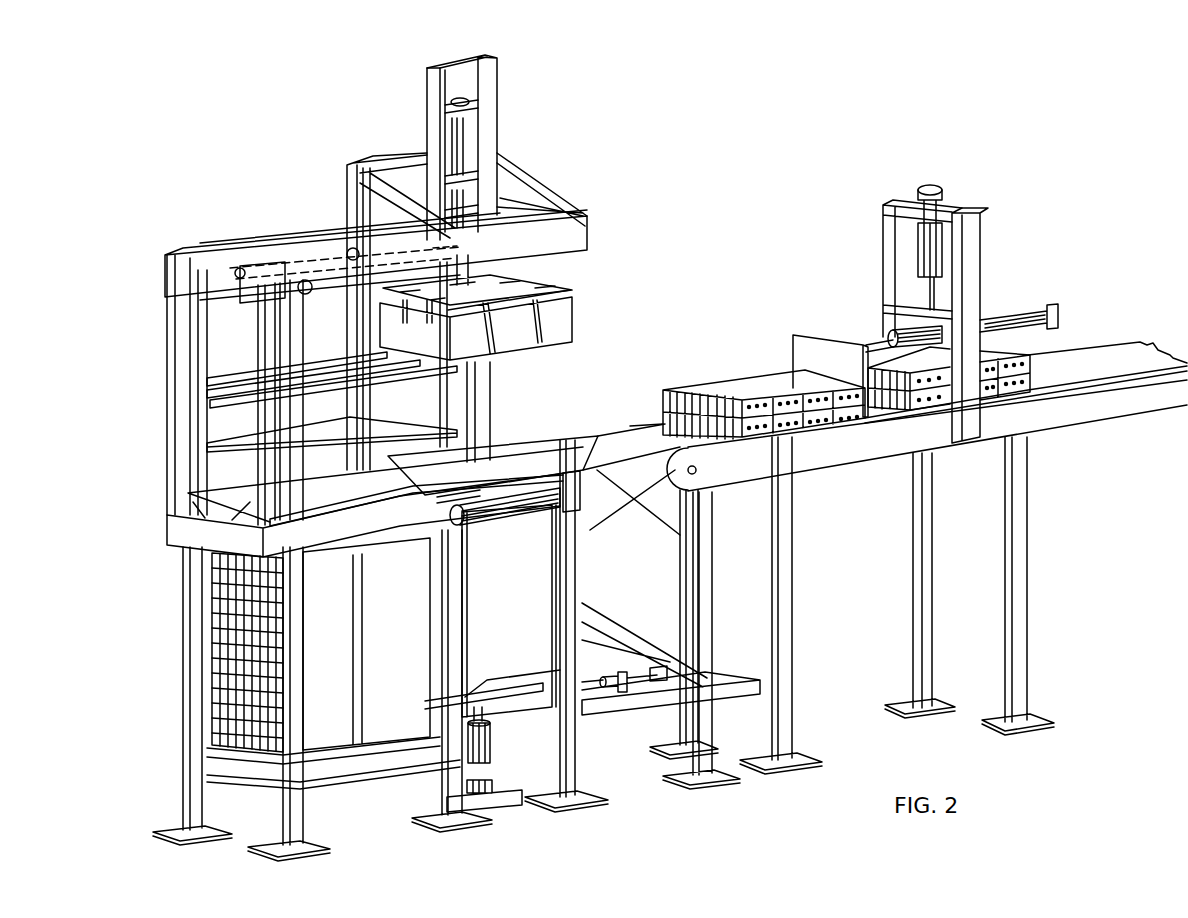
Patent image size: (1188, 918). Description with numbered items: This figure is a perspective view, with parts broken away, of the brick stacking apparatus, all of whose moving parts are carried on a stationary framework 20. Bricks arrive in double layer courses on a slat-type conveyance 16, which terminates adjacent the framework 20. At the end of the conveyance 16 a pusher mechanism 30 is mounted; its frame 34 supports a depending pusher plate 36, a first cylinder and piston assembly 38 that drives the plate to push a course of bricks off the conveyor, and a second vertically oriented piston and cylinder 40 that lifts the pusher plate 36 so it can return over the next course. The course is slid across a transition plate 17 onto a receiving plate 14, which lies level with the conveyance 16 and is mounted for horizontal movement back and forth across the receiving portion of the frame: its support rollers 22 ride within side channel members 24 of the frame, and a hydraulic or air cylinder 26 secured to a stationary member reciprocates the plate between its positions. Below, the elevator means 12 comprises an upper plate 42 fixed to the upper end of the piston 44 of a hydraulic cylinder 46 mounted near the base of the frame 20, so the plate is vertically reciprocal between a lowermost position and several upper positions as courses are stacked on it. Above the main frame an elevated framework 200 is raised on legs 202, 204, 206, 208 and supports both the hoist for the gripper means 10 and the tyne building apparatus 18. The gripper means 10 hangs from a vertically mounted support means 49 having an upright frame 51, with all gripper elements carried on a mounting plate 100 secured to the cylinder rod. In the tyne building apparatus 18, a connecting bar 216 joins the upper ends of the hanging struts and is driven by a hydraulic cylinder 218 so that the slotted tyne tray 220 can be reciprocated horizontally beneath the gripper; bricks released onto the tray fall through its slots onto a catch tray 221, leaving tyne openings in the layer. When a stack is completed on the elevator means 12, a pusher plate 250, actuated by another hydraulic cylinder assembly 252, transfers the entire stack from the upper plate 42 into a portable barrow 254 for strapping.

The gripper means 10 is at (588, 325).
The elevator means 12 is at (510, 676).
The receiving plate 14 is at (513, 480).
The conveyance 16 is at (1105, 363).
The transition plate 17 is at (580, 477).
The tyne building apparatus 18 is at (254, 359).
The stationary framework 20 is at (176, 690).
The support rollers 22 is at (478, 490).
The side channel members 24 is at (370, 540).
The hydraulic or air cylinder 26 is at (482, 510).
The pusher mechanism 30 is at (868, 311).
The frame 34 is at (972, 267).
The pusher plate 36 is at (808, 360).
The first cylinder and piston assembly 38 is at (1020, 322).
The second vertically oriented piston and cylinder 40 is at (933, 258).
The upper plate 42 is at (470, 677).
The piston 44 is at (483, 714).
The hydraulic cylinder 46 is at (486, 741).
The vertically mounted support means 49 is at (513, 120).
The upright frame 51 is at (433, 93).
The mounting plate 100 is at (517, 280).
The elevated framework 200 is at (315, 230).
The leg 202 is at (262, 460).
The leg 204 is at (170, 447).
The leg 206 is at (353, 184).
The leg 208 is at (486, 393).
The connecting bar 216 is at (228, 268).
The hydraulic cylinder 218 is at (350, 268).
The slotted tyne tray 220 is at (325, 375).
The catch tray 221 is at (362, 448).
The pusher plate 250 is at (535, 593).
The hydraulic cylinder assembly 252 is at (607, 690).
The portable barrow 254 is at (347, 688).